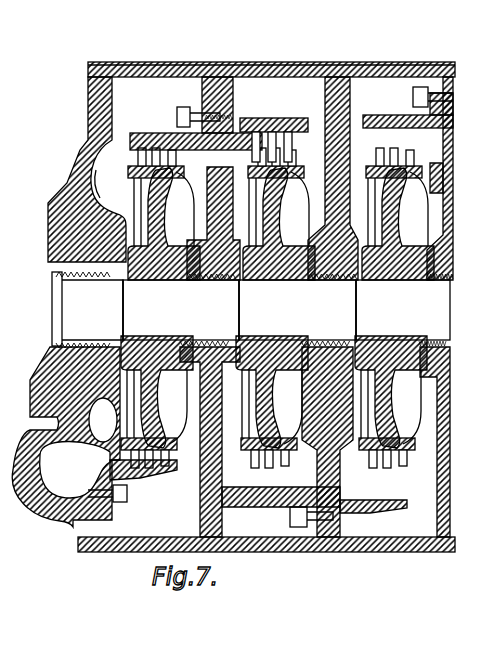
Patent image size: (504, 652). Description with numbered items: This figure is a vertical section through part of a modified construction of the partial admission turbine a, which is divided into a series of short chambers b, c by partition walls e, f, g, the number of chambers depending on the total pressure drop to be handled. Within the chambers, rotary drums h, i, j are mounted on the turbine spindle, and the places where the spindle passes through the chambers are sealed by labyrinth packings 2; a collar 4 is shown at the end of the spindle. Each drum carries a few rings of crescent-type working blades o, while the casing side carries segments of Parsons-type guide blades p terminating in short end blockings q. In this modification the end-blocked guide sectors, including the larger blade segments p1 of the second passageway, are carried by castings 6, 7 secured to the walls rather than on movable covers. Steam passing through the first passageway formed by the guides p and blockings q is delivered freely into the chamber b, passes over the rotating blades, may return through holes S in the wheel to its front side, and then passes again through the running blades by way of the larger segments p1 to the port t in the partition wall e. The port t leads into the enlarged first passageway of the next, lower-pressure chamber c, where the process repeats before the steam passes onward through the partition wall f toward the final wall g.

The port t is at (247, 56).
The turbine a is at (67, 146).
The chamber b is at (86, 155).
The partition wall e is at (215, 98).
The partition wall f is at (338, 62).
The partition wall g is at (455, 108).
The holes S is at (277, 308).
The rings of blades o is at (138, 162).
The blade segments p1 is at (270, 512).
The casting 7 is at (299, 307).
The end blockings q is at (270, 124).
The casting 6 is at (288, 130).
The segments of guide blades p is at (150, 478).
The shaft collar 4 is at (82, 285).
The rotary drum h is at (181, 310).
The labyrinth packings 2 is at (239, 310).
The chamber c is at (251, 310).
The rotary drum i is at (297, 310).
The rotary drum j is at (403, 310).